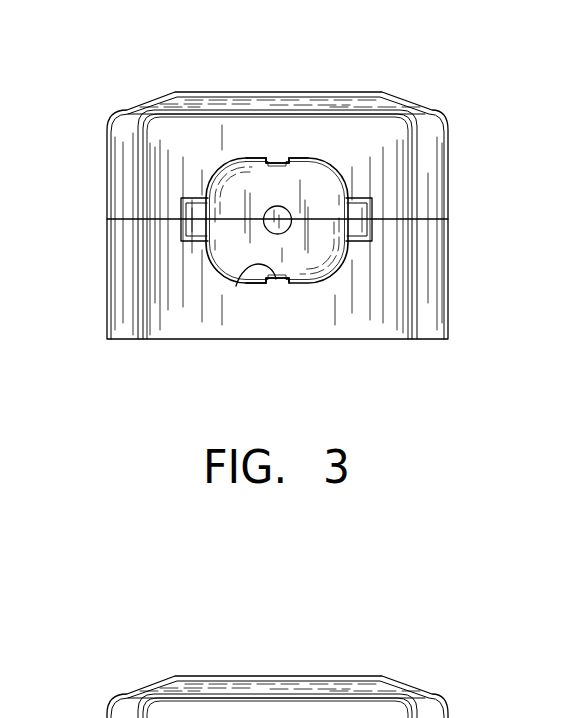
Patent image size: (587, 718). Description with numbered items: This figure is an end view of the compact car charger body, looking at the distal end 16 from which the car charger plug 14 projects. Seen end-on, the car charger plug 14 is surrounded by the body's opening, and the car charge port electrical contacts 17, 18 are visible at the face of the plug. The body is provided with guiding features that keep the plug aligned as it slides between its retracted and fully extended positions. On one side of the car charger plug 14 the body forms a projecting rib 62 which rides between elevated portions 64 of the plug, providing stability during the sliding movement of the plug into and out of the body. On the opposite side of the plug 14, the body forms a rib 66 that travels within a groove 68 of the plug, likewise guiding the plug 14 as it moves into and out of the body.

The car charger plug 14 is at (322, 189).
The distal end 16 is at (221, 150).
The car charge port electrical contact 17 is at (192, 212).
The car charge port electrical contact 18 is at (267, 229).
The projecting rib 62 is at (277, 158).
The elevated portions 64 is at (258, 159).
The rib 66 is at (278, 283).
The groove 68 is at (233, 282).